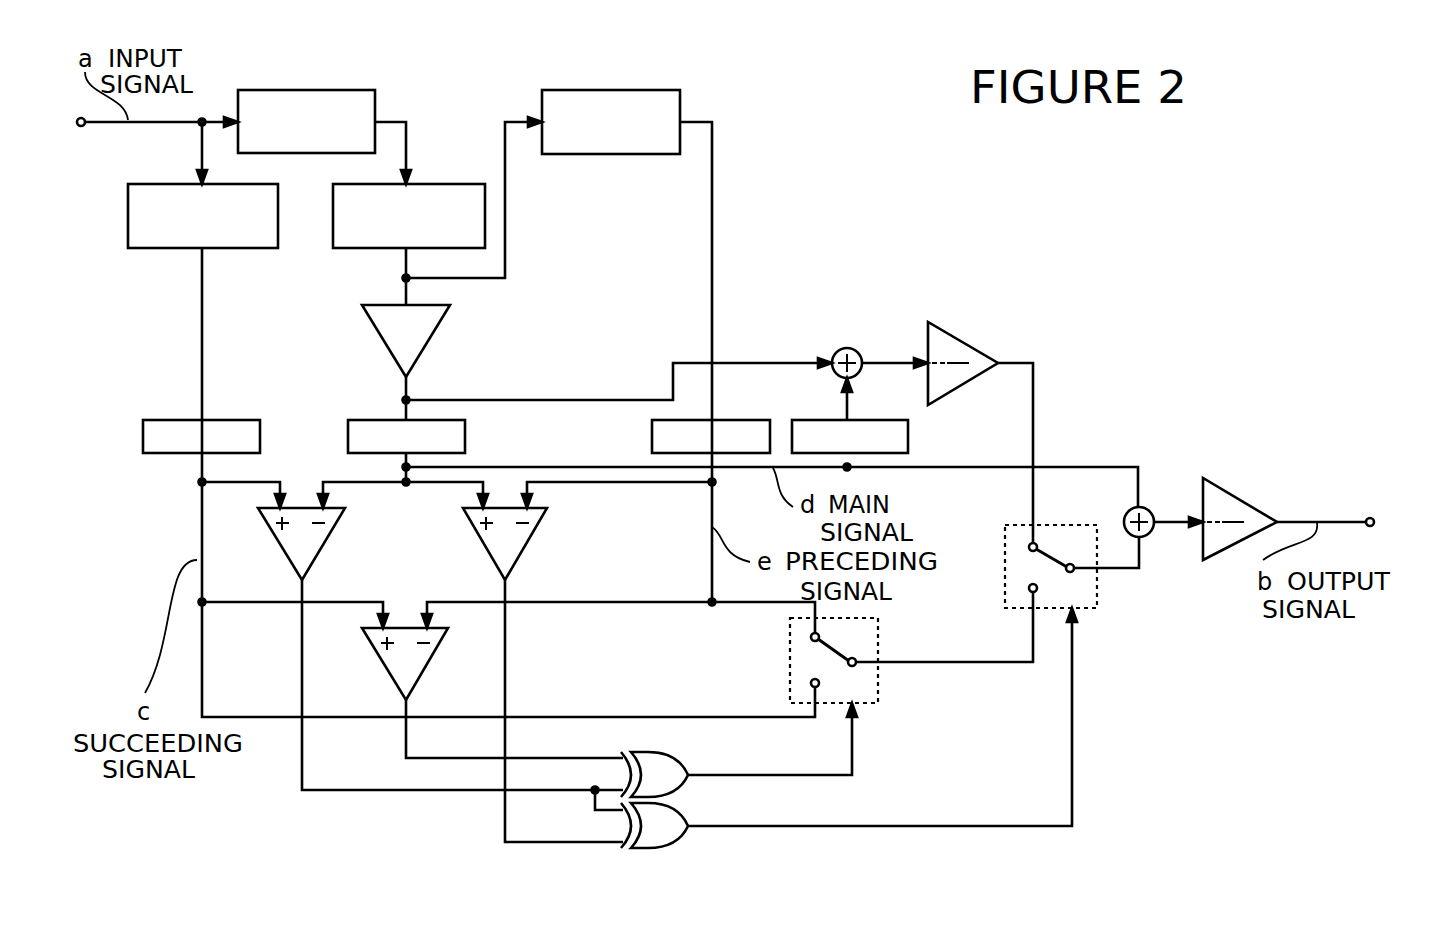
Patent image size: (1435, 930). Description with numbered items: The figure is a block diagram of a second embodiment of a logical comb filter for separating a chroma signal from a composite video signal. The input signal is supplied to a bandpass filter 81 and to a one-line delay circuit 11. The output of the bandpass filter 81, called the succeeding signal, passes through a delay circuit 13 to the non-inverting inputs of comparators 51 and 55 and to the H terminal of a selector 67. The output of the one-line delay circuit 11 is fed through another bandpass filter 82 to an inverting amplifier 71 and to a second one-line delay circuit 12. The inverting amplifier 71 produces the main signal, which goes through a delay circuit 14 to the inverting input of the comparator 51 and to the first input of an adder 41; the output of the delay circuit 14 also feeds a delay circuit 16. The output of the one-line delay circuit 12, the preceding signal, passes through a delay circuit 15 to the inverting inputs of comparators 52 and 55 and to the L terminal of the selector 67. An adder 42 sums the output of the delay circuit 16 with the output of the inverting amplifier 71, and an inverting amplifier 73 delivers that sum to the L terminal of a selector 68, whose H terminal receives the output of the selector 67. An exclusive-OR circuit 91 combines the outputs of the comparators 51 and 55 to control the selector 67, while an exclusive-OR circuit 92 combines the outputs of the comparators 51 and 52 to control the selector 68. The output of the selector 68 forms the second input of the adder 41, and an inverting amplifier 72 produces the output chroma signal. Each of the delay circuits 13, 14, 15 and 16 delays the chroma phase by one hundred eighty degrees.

The one-line delay circuit 11 is at (327, 90).
The one-line delay circuit 12 is at (633, 90).
The delay circuit 13 is at (232, 420).
The delay circuit 14 is at (465, 437).
The delay circuit 15 is at (652, 437).
The delay circuit 16 is at (908, 437).
The adder 41 is at (1143, 507).
The adder 42 is at (842, 348).
The comparator 51 is at (333, 533).
The comparator 52 is at (533, 540).
The comparator 55 is at (437, 653).
The selector 67 is at (790, 657).
The selector 68 is at (1097, 590).
The inverting amplifier 71 is at (437, 330).
The inverting amplifier 72 is at (1227, 487).
The inverting amplifier 73 is at (950, 332).
The bandpass filter 81 is at (164, 248).
The bandpass filter 82 is at (354, 248).
The exclusive-OR circuit 91 is at (680, 757).
The exclusive-OR circuit 92 is at (680, 807).